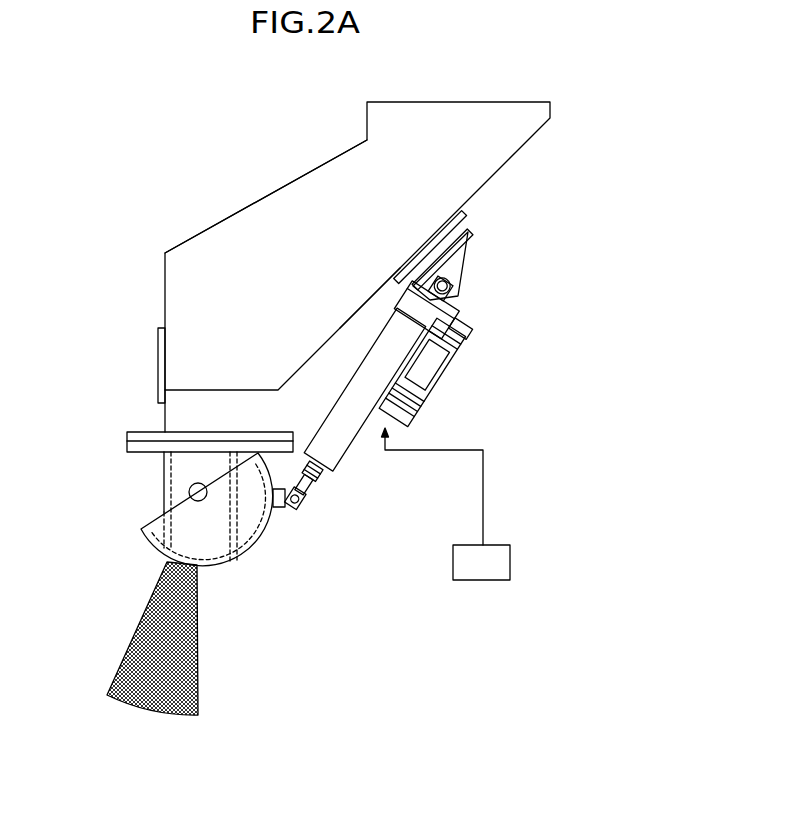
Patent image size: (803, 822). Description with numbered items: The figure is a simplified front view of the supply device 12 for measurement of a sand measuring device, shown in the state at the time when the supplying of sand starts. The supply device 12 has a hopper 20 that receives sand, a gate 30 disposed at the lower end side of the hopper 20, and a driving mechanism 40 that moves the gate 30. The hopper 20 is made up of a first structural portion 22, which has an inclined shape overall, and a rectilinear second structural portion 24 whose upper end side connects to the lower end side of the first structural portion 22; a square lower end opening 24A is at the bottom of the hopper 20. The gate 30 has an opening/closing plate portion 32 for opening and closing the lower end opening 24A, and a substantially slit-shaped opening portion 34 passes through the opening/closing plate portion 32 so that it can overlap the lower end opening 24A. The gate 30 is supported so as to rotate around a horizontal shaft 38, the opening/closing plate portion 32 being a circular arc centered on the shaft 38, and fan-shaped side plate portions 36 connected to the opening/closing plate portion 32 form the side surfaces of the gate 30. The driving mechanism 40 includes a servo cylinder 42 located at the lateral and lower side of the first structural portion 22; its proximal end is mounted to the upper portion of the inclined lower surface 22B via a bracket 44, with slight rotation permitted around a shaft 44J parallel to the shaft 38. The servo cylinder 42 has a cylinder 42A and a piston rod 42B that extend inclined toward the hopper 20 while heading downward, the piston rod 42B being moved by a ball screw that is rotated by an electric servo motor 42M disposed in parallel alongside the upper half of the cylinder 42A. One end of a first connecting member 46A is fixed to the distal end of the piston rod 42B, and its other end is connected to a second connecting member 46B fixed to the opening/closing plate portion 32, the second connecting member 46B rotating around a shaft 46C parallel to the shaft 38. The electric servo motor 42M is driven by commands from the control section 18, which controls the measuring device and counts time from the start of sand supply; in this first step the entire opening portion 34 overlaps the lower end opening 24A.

The supply device for measurement 12 is at (198, 205).
The control section 18 is at (497, 545).
The hopper 20 is at (150, 283).
The first structural portion 22 is at (278, 188).
The inclined lower surface 22B is at (370, 310).
The second structural portion 24 is at (150, 487).
The lower end opening 24A is at (232, 560).
The gate 30 is at (138, 517).
The opening/closing plate portion 32 is at (152, 553).
The opening portion 34 is at (198, 493).
The side plate portion 36 is at (246, 526).
The shaft 38 is at (178, 483).
The driving mechanism 40 is at (398, 463).
The servo cylinder 42 is at (348, 350).
The cylinder 42A is at (353, 395).
The piston rod 42B is at (335, 473).
The electric servo motor 42M is at (443, 373).
The bracket 44 is at (466, 240).
The shaft 44J is at (457, 290).
The first connecting member 46A is at (310, 491).
The second connecting member 46B is at (284, 510).
The shaft 46C is at (292, 505).